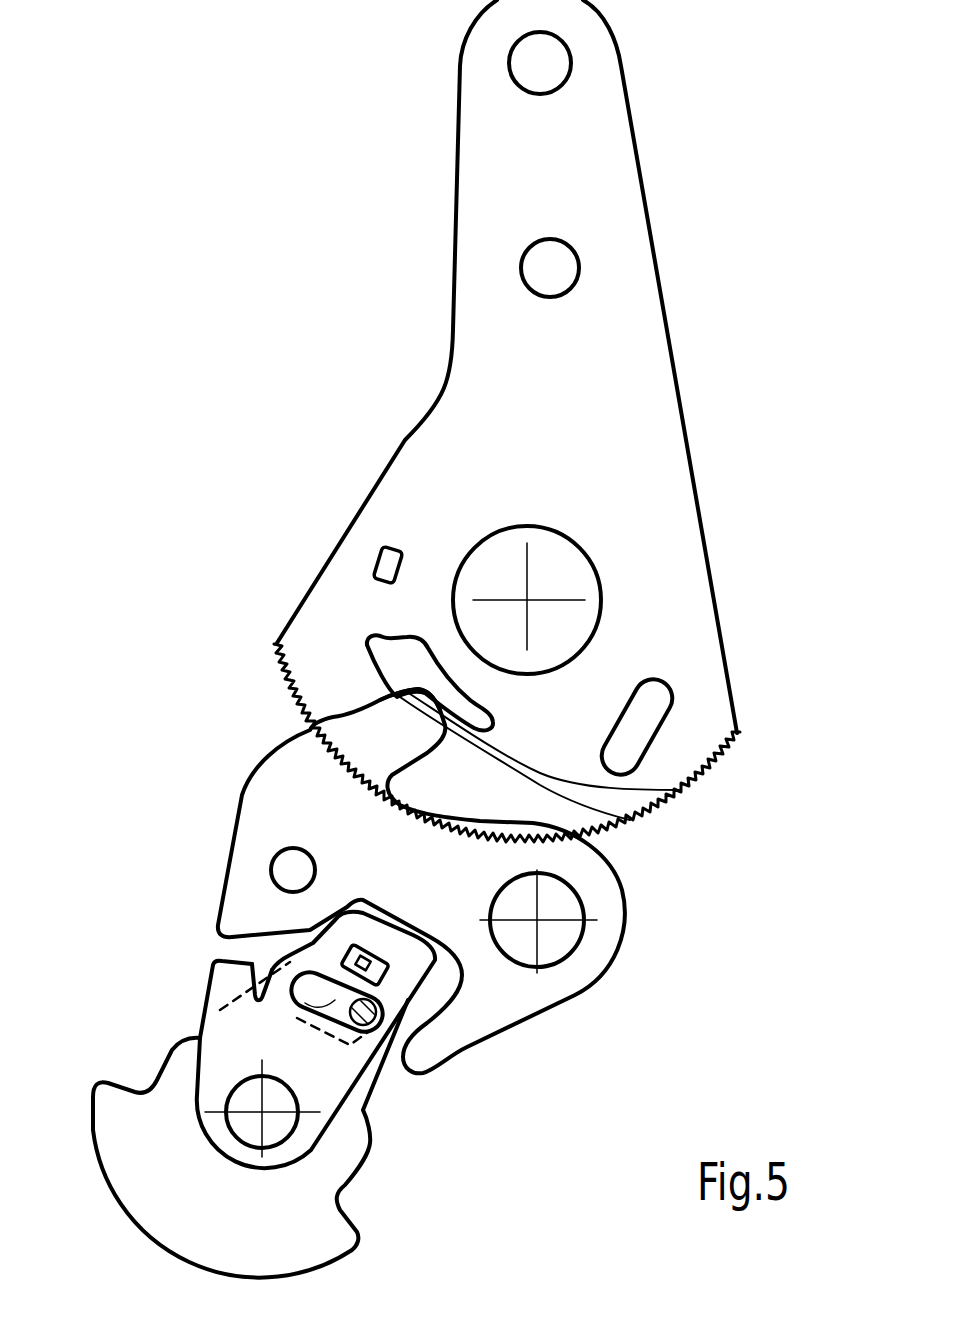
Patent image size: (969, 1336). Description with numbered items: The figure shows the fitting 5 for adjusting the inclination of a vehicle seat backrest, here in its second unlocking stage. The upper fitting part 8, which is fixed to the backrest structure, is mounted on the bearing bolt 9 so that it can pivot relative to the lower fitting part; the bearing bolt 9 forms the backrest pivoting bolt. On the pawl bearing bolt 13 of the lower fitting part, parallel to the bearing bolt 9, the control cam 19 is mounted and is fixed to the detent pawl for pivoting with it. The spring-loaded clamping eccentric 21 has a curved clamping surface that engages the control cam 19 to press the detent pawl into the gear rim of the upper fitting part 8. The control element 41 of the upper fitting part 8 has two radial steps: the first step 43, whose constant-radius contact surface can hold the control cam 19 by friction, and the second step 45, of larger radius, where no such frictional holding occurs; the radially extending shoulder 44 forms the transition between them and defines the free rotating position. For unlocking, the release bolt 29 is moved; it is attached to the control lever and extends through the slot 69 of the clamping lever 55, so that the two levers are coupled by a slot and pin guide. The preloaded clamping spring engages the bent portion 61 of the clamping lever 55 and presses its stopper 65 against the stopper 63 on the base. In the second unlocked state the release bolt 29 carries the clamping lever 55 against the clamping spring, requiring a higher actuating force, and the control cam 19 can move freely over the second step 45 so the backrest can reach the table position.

The fitting 5 is at (365, 394).
The upper fitting part 8 is at (637, 457).
The bearing bolt 9 is at (527, 600).
The pawl bearing bolt 13 is at (540, 925).
The control cam 19 is at (460, 863).
The spring-loaded clamping eccentric 21 is at (407, 960).
The release bolt 29 is at (390, 1060).
The control element 41 is at (367, 657).
The first step 43 is at (680, 790).
The radially extending shoulder 44 is at (630, 820).
The second step 45 is at (383, 687).
The clamping lever 55 is at (307, 1060).
The bent portion 61 is at (227, 973).
The stopper 63 is at (413, 977).
The stopper 65 is at (425, 985).
The slot 69 is at (300, 997).